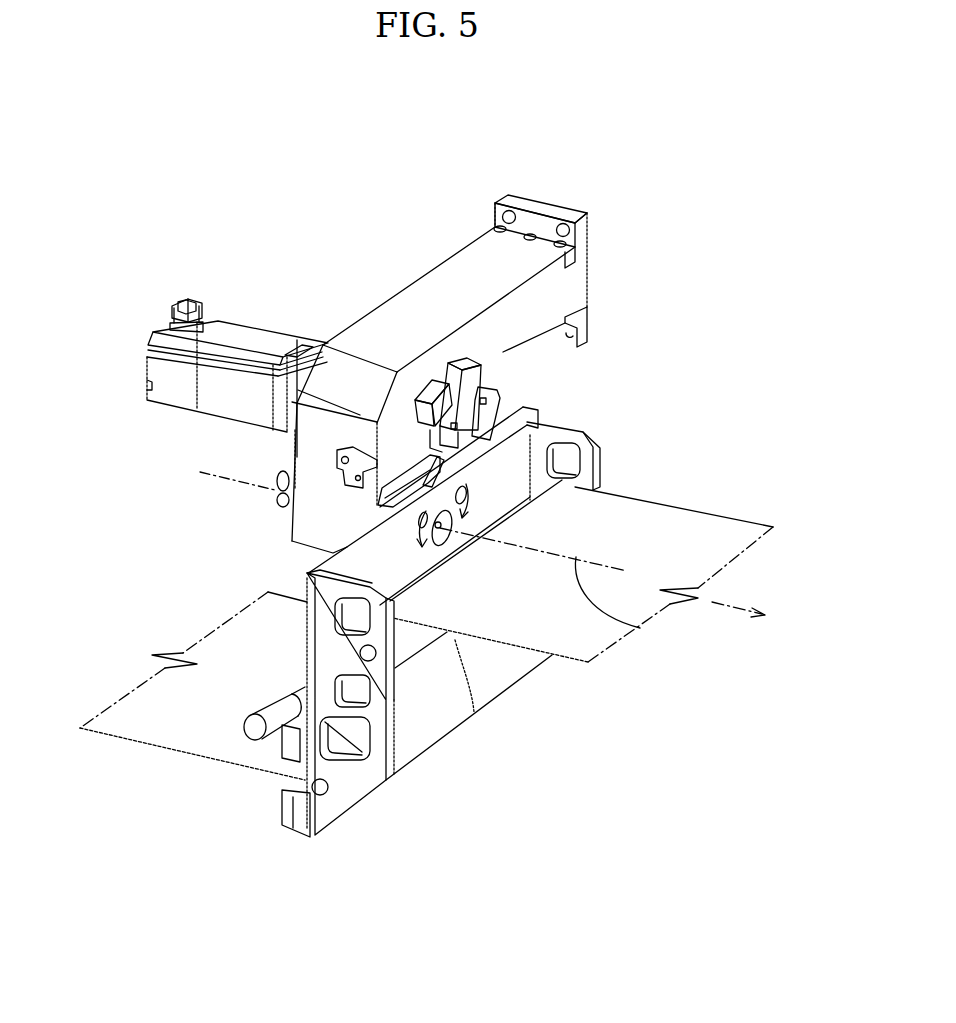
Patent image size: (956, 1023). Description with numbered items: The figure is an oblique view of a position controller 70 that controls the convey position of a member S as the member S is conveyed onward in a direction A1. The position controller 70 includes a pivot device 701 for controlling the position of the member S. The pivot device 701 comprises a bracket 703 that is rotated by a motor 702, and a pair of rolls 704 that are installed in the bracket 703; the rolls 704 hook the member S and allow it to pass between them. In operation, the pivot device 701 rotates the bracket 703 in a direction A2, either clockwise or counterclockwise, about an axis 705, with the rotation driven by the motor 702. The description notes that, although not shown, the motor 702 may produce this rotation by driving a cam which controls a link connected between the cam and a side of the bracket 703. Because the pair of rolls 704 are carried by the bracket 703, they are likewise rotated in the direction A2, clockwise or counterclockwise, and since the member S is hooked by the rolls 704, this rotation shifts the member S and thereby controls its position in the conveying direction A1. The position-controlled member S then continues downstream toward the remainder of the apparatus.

The position controller 70 is at (412, 161).
The pivot device 701 is at (567, 390).
The motor 702 is at (253, 338).
The bracket 703 is at (395, 567).
The pair of rolls 704 is at (413, 640).
The axis 705 is at (633, 626).
The member S is at (682, 520).
The direction A1 is at (619, 582).
The direction A2 is at (455, 493).